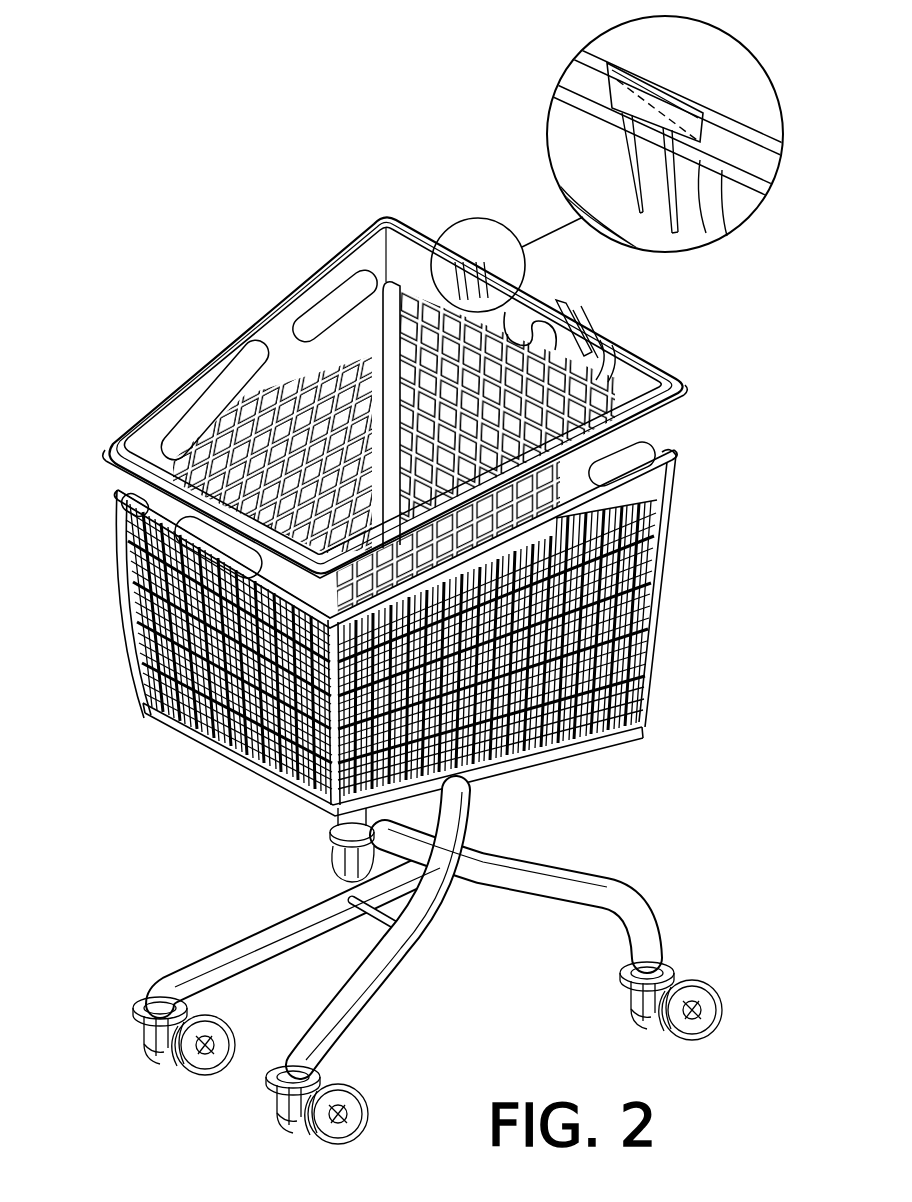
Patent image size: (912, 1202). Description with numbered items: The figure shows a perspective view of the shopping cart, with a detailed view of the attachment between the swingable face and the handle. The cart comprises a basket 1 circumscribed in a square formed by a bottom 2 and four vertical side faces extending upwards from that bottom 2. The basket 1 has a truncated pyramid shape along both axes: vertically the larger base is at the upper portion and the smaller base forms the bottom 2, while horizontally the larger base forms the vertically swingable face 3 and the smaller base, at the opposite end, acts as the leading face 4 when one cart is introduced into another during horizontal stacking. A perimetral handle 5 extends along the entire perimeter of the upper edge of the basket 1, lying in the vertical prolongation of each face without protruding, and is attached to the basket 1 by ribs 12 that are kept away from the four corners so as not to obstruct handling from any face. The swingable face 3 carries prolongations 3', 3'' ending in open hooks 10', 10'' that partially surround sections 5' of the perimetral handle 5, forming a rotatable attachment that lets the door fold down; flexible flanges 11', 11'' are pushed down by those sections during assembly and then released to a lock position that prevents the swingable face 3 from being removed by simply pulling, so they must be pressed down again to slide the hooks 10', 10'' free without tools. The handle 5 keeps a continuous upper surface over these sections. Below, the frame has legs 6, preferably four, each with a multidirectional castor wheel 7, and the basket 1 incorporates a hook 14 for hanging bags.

The basket 1 is at (640, 487).
The bottom 2 is at (480, 770).
The swingable face 3 is at (463, 421).
The prolongation 3' is at (745, 218).
The prolongation 3'' is at (679, 353).
The leading face 4 is at (185, 550).
The perimetral handle 5 is at (401, 303).
The section of the perimetral handle 5' is at (585, 106).
The leg 6 is at (230, 950).
The multidirectional rotating wheel 7 is at (335, 855).
The open hook 10' is at (703, 78).
The open hook 10'' is at (636, 312).
The flexible flange 11' is at (569, 173).
The flexible flange 11'' is at (667, 320).
The rib 12 is at (290, 330).
The hook 14 is at (530, 325).